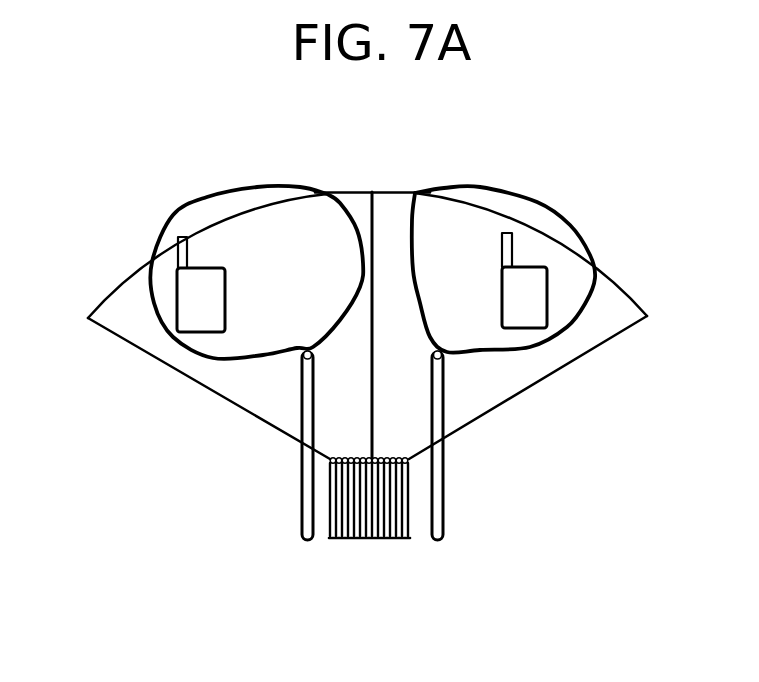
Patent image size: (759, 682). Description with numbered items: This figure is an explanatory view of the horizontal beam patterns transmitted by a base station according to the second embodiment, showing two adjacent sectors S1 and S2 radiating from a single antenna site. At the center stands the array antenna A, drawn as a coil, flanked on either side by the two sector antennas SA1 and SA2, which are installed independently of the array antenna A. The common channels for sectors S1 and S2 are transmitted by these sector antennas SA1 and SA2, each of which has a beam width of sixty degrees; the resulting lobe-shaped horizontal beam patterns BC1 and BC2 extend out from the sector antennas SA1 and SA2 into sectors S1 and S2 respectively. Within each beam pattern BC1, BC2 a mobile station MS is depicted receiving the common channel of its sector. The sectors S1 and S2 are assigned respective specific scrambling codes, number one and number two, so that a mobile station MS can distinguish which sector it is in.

The sector S1 is at (353, 203).
The sector S2 is at (625, 305).
The first beam coverage area BC1 is at (200, 358).
The second beam coverage area BC2 is at (565, 342).
The sector antenna SA1 is at (297, 507).
The sector antenna SA2 is at (445, 500).
The array antenna A is at (367, 542).
The mobile station MS is at (362, 282).